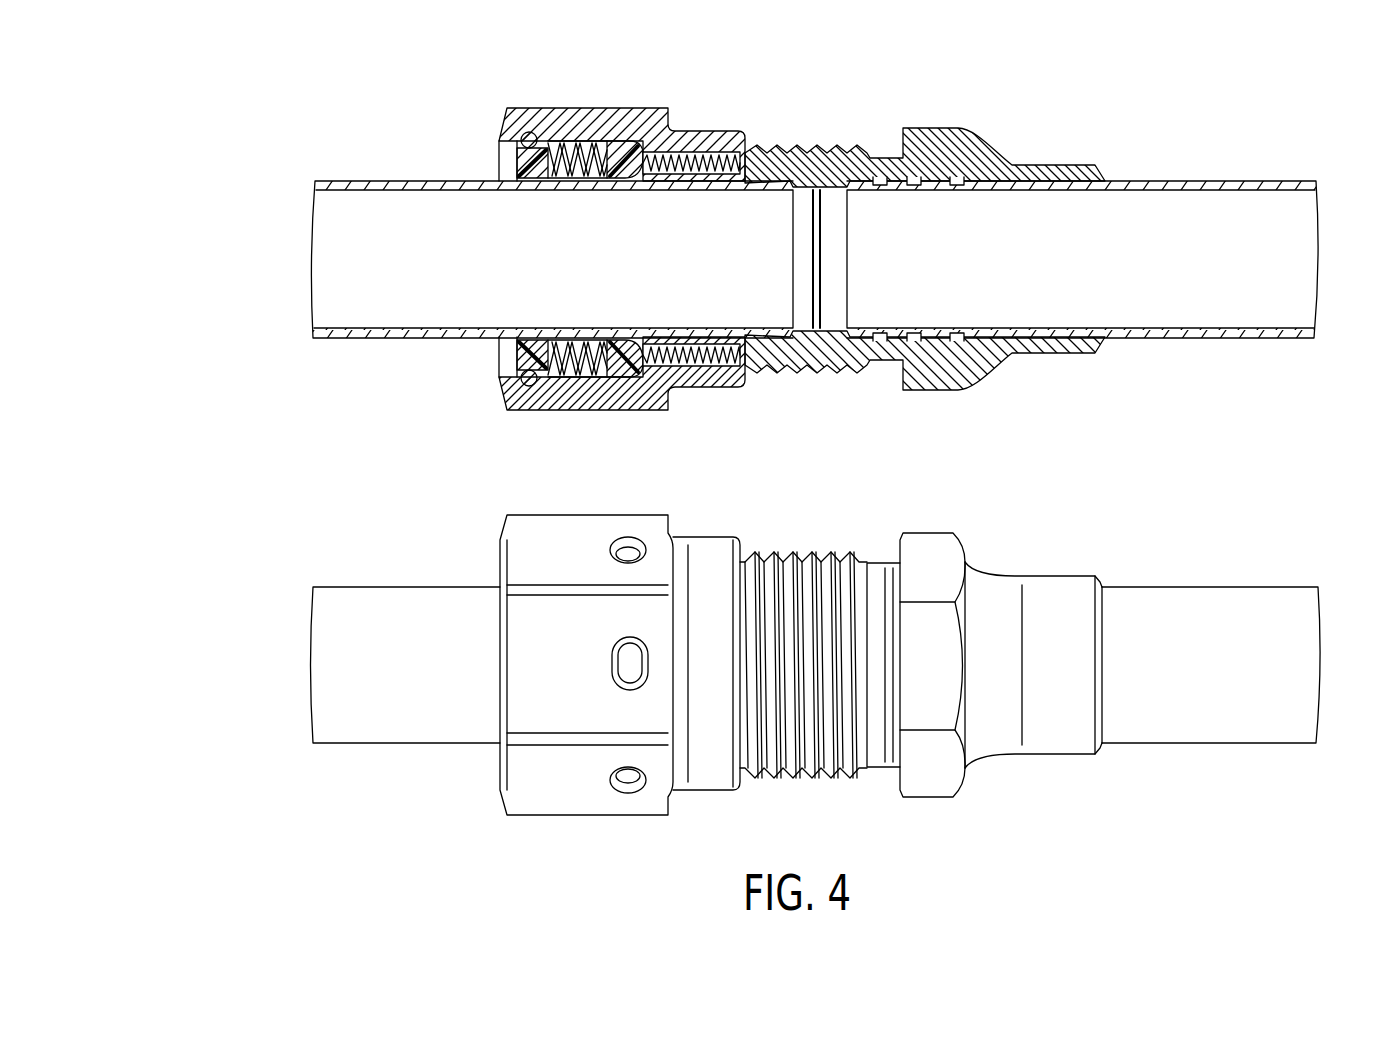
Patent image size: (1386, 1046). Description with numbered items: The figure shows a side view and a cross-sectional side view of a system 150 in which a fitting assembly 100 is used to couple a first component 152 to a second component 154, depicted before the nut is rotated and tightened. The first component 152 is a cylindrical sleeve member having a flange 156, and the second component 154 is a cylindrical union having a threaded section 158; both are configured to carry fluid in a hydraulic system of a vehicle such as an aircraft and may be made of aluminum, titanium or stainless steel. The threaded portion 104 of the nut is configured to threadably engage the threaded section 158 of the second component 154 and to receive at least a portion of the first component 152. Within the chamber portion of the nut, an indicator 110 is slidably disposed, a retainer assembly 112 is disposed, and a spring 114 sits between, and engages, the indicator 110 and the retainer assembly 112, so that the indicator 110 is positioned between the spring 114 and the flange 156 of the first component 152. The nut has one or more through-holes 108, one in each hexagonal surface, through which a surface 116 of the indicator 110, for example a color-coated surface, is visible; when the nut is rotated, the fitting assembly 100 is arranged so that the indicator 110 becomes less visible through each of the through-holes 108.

The fitting assembly 100 is at (476, 89).
The threaded portion 104 is at (637, 415).
The through-holes 108 is at (613, 663).
The indicator 110 is at (623, 158).
The retainer assembly 112 is at (515, 106).
The spring 114 is at (563, 145).
The surface 116 is at (633, 664).
The system 150 is at (238, 93).
The first component 152 is at (380, 181).
The second component 154 is at (1155, 181).
The flange 156 is at (660, 168).
The threaded section 158 is at (733, 125).